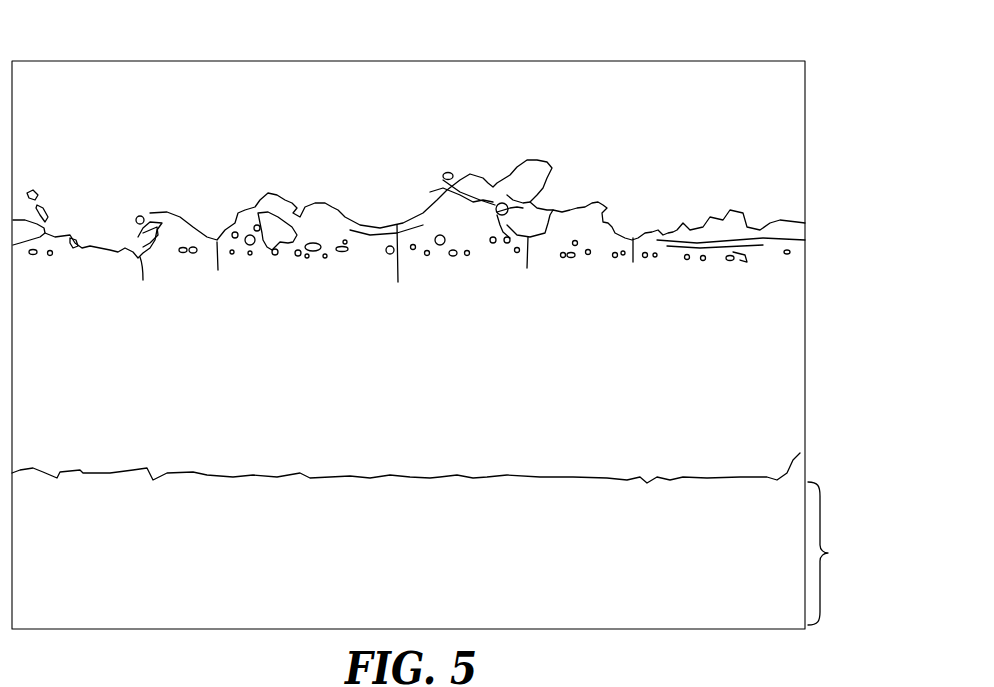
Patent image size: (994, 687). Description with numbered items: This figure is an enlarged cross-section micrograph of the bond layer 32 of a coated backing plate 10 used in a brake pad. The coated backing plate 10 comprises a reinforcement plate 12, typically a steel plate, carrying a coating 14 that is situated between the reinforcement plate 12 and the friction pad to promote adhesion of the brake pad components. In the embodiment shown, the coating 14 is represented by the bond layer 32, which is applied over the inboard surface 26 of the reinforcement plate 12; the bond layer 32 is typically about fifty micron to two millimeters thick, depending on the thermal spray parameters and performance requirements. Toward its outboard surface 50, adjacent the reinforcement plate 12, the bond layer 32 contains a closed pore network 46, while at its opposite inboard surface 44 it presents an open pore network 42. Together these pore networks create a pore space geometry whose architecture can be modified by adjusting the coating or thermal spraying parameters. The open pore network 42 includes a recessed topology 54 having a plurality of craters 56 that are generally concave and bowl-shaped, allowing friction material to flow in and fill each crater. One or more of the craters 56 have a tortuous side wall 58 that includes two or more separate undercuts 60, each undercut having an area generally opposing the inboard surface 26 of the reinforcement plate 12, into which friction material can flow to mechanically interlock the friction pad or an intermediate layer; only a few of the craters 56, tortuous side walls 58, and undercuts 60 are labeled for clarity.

The coated backing plate 10 is at (669, 48).
The reinforcement plate 12 is at (832, 553).
The coating 14 is at (785, 357).
The inboard surface 26 is at (800, 453).
The bond layer 32 is at (795, 306).
The open pore network 42 is at (603, 223).
The inboard surface 44 is at (345, 218).
The closed pore network 46 is at (743, 257).
The outboard surface 50 is at (485, 483).
The recessed topology 54 is at (775, 271).
The craters 56 is at (398, 267).
The tortuous side wall 58 is at (480, 218).
The undercuts 60 is at (137, 237).